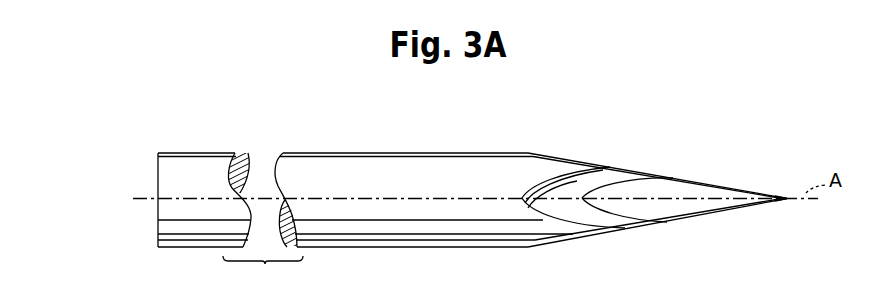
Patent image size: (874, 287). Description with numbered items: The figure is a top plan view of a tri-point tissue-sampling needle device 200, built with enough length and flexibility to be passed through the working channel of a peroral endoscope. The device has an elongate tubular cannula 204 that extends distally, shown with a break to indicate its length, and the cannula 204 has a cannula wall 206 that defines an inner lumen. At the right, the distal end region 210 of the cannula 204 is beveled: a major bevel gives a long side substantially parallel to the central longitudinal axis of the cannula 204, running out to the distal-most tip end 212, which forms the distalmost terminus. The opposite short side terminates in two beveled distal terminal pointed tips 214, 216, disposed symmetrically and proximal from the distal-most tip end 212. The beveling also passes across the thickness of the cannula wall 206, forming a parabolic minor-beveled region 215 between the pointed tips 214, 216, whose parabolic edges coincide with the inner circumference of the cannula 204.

The tri-point tissue-sampling needle device 200 is at (147, 142).
The cannula 204 is at (198, 228).
The cannula wall 206 is at (214, 162).
The distal end region 210 is at (533, 143).
The distal-most tip end 212 is at (788, 200).
The beveled distal terminal pointed tip 214 is at (655, 173).
The parabolic minor-beveled region 215 is at (555, 192).
The beveled distal terminal pointed tip 216 is at (647, 224).